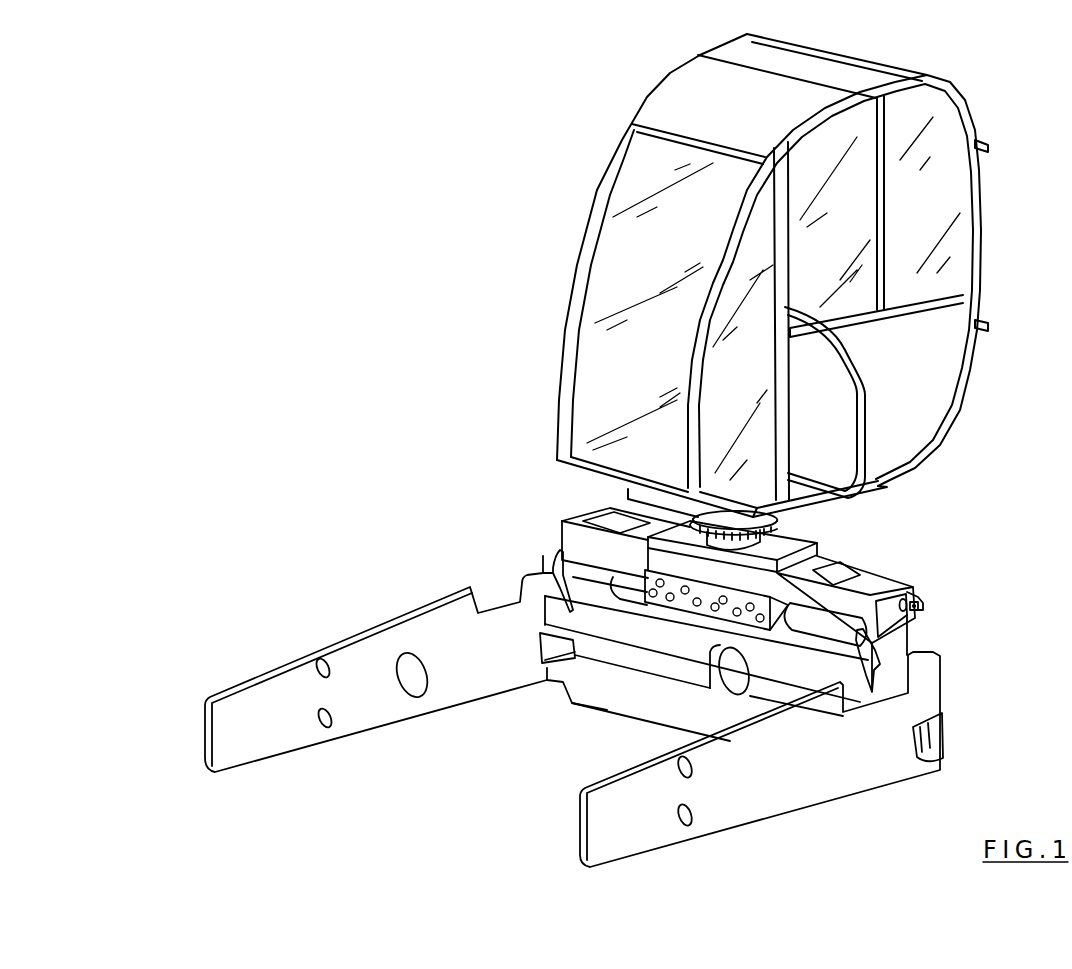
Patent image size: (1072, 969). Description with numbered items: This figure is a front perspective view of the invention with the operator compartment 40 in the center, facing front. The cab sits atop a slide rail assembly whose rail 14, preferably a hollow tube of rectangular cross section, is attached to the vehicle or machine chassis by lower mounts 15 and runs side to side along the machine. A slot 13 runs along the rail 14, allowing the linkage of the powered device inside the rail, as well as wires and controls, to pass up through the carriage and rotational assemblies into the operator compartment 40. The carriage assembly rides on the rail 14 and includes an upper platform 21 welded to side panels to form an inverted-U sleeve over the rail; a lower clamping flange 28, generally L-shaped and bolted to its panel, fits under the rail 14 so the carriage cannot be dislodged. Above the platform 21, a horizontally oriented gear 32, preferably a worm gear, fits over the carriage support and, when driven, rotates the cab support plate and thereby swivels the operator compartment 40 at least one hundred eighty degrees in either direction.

The operator compartment 40 is at (545, 289).
The rail 14 is at (578, 537).
The gear 32 is at (780, 526).
The upper platform 21 is at (822, 546).
The slot 13 is at (833, 568).
The lower clamping flange 28 is at (688, 603).
The lower mount 15 is at (895, 650).